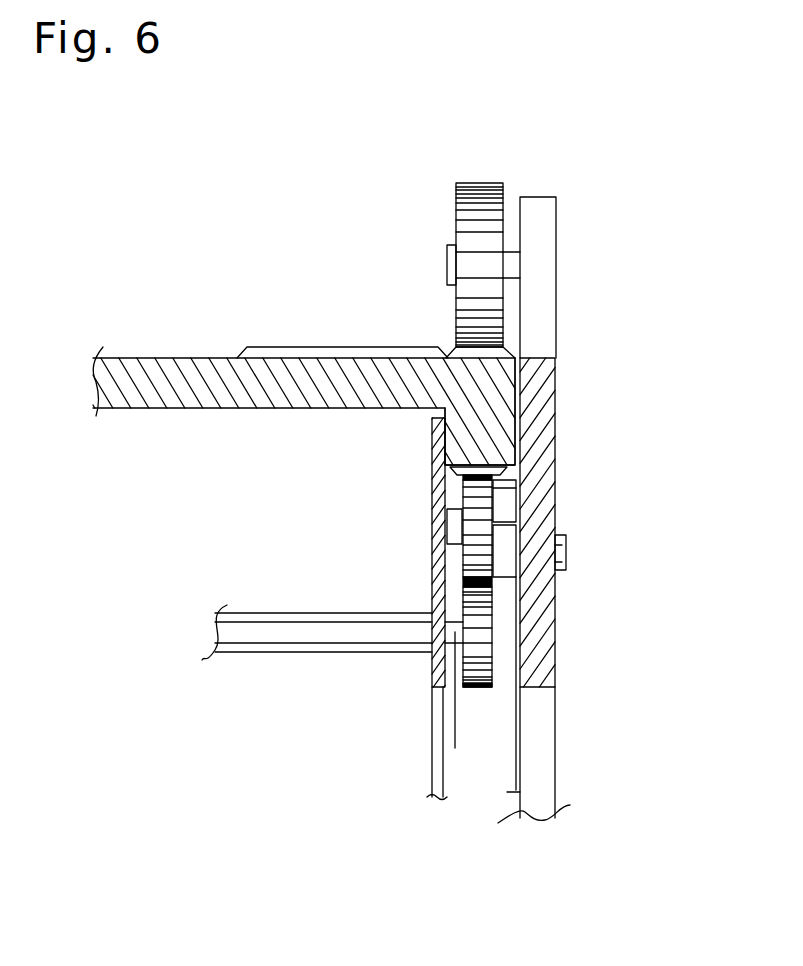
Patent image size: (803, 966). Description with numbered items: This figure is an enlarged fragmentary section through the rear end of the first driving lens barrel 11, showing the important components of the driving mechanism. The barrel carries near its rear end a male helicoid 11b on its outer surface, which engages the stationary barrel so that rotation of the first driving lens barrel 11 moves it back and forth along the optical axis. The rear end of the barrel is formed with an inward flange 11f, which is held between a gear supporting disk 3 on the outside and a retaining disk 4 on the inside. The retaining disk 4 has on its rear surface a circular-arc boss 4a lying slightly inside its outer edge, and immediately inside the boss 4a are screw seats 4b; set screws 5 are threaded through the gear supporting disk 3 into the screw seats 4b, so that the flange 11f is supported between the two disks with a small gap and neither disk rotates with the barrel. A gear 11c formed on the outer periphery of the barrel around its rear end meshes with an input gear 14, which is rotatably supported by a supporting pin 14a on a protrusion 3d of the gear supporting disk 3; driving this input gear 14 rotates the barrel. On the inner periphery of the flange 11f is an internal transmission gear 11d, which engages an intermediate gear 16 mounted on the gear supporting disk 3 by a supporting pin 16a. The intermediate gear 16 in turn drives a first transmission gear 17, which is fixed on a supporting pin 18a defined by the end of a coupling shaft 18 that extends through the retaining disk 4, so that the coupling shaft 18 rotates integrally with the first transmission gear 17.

The gear supporting disk 3 is at (546, 648).
The protrusion 3d is at (542, 222).
The retaining disk 4 is at (438, 685).
The boss 4a is at (508, 482).
The screw seats 4b is at (498, 557).
The set screws 5 is at (565, 552).
The first driving lens barrel 11 is at (165, 363).
The male helicoid 11b is at (303, 350).
The gear 11c is at (500, 353).
The transmission gear 11d is at (465, 472).
The flange 11f is at (493, 407).
The input gear 14 is at (463, 217).
The supporting pin 14a is at (448, 268).
The intermediate gear 16 is at (480, 545).
The supporting pin 16a is at (453, 530).
The first transmission gear 17 is at (482, 688).
The coupling shaft 18 is at (288, 633).
The supporting pin 18a is at (456, 748).